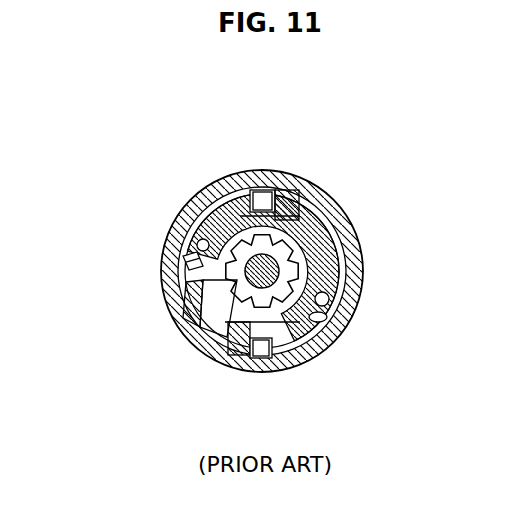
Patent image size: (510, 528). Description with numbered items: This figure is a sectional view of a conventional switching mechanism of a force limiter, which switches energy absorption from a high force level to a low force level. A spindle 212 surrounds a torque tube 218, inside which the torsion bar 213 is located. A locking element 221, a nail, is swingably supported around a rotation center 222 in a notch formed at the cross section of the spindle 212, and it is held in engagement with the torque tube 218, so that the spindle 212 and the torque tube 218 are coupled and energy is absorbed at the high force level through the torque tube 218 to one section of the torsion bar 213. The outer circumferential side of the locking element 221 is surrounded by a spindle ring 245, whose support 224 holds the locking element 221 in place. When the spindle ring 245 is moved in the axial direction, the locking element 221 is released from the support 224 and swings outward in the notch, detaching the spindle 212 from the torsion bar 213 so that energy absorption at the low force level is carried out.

The spindle 212 is at (197, 206).
The torsion bar 213 is at (333, 337).
The torque tube 218 is at (283, 240).
The locking element 221 is at (183, 262).
The rotation center 222 is at (196, 241).
The support 224 is at (195, 304).
The spindle ring 245 is at (300, 183).